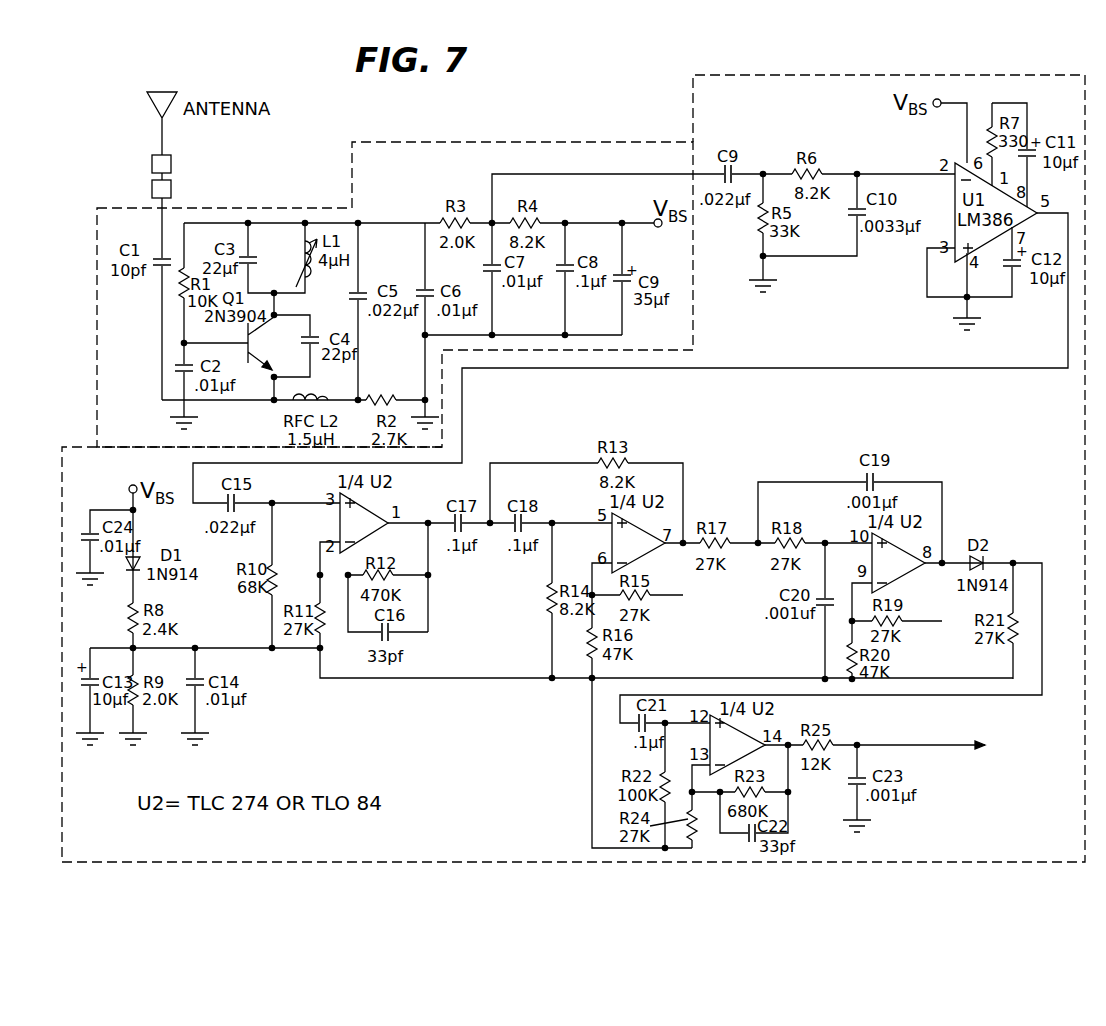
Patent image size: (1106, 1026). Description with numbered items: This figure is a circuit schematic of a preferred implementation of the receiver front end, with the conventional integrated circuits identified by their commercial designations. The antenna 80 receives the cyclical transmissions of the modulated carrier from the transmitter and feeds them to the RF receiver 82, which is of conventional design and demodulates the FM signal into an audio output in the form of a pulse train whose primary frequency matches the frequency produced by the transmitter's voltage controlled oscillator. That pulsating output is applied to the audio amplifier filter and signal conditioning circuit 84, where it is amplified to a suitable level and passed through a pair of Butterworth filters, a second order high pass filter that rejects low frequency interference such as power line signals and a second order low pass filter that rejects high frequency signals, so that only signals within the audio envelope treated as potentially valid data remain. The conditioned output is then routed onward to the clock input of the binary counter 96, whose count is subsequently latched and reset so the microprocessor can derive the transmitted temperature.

The antenna 80 is at (172, 161).
The RF receiver 82 is at (617, 141).
The audio amplifier filter and signal conditioning circuit 84 is at (276, 866).
The binary counter 96 is at (975, 750).